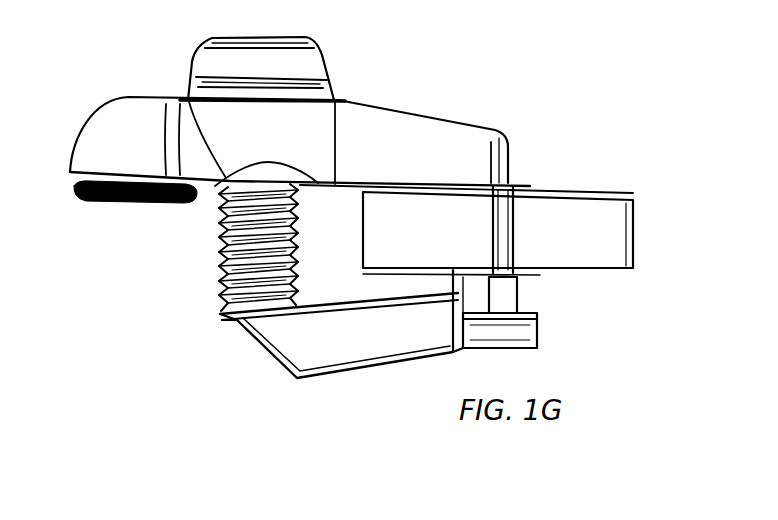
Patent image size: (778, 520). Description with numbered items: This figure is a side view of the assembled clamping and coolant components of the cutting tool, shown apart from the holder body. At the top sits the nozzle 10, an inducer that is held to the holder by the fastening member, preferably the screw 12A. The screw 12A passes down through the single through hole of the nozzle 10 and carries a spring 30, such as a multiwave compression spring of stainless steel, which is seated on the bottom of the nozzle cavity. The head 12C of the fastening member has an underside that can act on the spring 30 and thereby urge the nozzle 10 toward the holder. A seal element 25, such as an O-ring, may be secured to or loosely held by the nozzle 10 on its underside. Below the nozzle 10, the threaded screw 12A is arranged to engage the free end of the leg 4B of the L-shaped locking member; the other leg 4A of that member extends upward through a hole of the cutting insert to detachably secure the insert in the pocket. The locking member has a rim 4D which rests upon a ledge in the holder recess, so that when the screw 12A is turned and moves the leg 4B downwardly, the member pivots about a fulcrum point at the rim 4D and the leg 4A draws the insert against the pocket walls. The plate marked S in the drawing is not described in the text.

The nozzle 10 is at (447, 140).
The head 12C is at (307, 62).
The spring 30 is at (188, 96).
The seal element 25 is at (97, 205).
The screw 12A is at (213, 263).
The plate S is at (618, 243).
The leg 4A is at (530, 285).
The rim 4D is at (523, 312).
The leg 4B is at (343, 350).